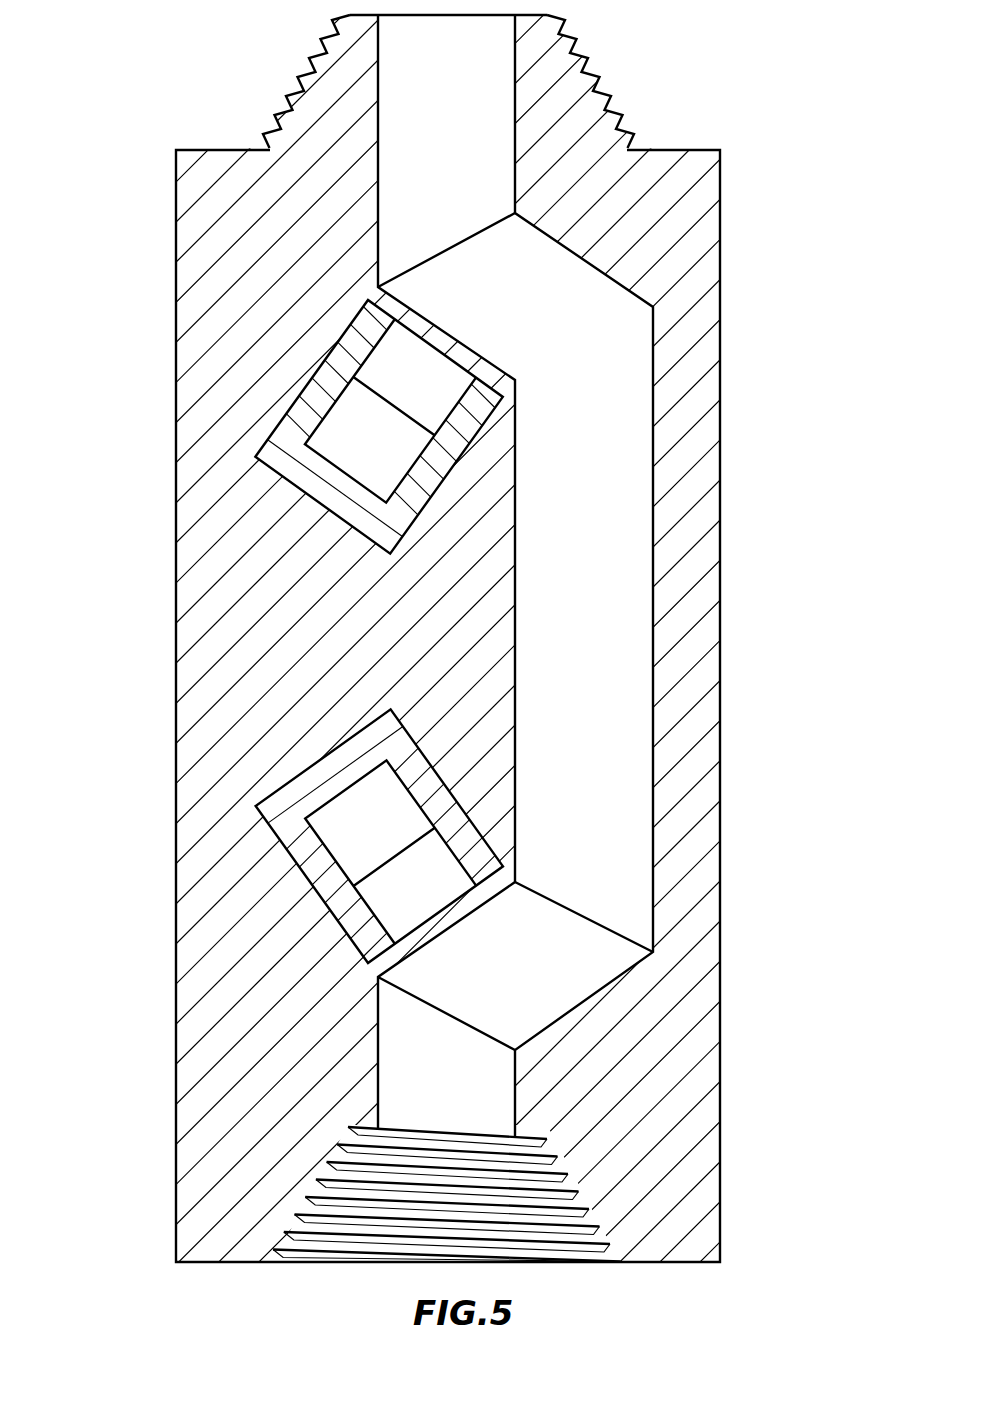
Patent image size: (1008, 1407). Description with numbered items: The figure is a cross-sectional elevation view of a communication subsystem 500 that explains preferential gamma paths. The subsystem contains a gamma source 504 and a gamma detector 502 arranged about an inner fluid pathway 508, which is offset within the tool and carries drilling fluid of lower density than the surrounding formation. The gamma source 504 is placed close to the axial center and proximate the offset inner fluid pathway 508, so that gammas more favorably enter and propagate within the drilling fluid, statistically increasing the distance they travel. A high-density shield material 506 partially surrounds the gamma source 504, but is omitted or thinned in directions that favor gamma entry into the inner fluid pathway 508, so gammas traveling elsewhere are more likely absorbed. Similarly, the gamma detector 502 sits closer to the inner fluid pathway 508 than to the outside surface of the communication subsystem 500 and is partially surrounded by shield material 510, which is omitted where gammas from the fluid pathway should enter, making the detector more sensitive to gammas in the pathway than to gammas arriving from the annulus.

The communication subsystem 500 is at (775, 310).
The gamma detector 502 is at (352, 854).
The gamma source 504 is at (320, 445).
The shield material 506 is at (328, 492).
The inner fluid pathway 508 is at (458, 113).
The shield material 510 is at (312, 777).